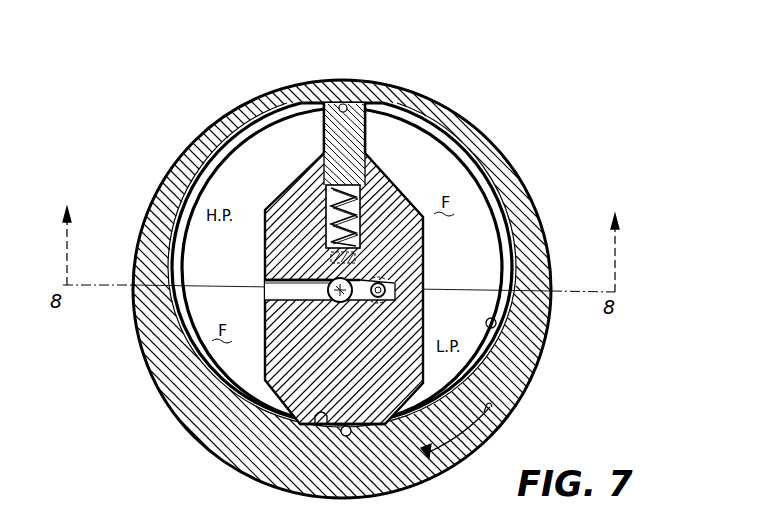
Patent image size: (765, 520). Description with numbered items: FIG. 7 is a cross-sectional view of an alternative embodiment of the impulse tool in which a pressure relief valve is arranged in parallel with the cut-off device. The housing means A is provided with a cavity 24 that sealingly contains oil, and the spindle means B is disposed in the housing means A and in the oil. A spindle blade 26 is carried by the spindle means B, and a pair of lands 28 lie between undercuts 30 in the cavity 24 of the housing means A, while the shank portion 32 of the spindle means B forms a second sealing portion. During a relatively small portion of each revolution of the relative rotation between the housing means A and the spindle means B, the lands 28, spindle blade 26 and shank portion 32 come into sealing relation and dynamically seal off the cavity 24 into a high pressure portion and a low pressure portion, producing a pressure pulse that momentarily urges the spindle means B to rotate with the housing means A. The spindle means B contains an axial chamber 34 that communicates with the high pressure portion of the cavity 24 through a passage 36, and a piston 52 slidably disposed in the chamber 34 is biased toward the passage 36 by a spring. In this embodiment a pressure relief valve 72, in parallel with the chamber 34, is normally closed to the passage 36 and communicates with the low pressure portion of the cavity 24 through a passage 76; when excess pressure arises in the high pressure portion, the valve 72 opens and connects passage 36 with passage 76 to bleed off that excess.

The housing means A is at (490, 132).
The spindle means B is at (414, 194).
The cavity 24 is at (496, 326).
The spindle blade 26 is at (348, 137).
The lands 28 is at (350, 103).
The undercuts 30 is at (215, 160).
The shank portion 32 is at (352, 424).
The chamber 34 is at (318, 301).
The passage 36 is at (264, 280).
The piston 52 is at (294, 278).
The pressure relief valve 72 is at (383, 268).
The passage 76 is at (393, 288).